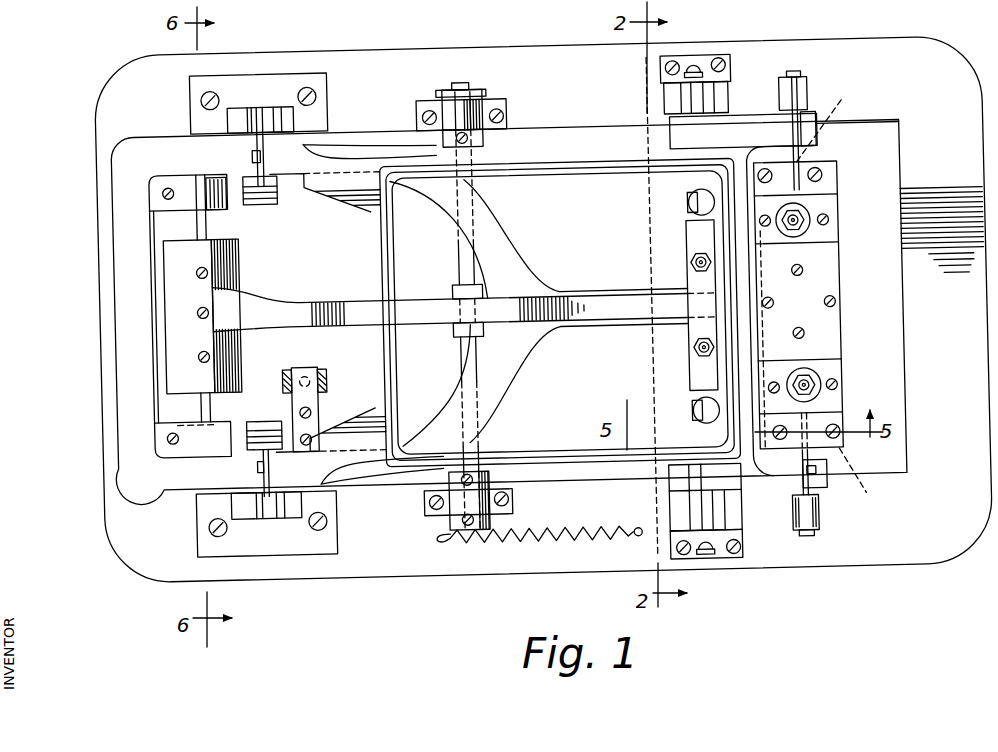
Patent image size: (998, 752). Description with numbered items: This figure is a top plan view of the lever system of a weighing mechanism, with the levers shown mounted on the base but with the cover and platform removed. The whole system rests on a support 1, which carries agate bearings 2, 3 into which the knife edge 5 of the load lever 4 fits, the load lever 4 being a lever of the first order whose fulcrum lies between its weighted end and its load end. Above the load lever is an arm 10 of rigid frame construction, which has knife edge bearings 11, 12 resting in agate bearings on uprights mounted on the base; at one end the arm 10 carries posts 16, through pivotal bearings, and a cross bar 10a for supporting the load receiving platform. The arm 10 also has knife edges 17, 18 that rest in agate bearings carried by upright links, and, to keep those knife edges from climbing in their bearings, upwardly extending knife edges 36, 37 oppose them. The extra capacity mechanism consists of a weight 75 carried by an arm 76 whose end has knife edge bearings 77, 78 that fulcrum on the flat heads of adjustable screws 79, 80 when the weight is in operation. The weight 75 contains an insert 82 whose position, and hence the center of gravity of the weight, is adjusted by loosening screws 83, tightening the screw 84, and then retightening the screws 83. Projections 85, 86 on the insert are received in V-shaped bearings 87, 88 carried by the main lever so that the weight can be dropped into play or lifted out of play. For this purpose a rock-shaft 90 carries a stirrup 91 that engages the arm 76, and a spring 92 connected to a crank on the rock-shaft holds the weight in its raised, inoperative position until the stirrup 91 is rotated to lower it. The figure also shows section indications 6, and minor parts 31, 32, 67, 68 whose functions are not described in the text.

The support 1 is at (949, 77).
The agate bearing 2 is at (725, 530).
The agate bearing 3 is at (713, 83).
The load lever 4 is at (503, 263).
The knife edge 5 is at (680, 55).
The bolt 6 is at (712, 560).
The arm 10 is at (553, 163).
The cross bar 10a is at (787, 295).
The knife edge bearing 11 is at (257, 503).
The knife edge bearing 12 is at (258, 107).
The post 16 is at (812, 215).
The knife edge 17 is at (783, 513).
The knife edge 18 is at (803, 77).
The block 31 is at (282, 205).
The block 32 is at (267, 430).
The knife edge 36 is at (865, 482).
The knife edge 37 is at (813, 268).
The screw 67 is at (305, 370).
The bracket 68 is at (322, 378).
The weight 75 is at (240, 265).
The arm 76 is at (343, 310).
The knife edge bearing 77 is at (687, 197).
The knife edge bearing 78 is at (690, 403).
The adjustable screw 79 is at (683, 205).
The adjustable screw 80 is at (693, 417).
The insert 82 is at (197, 337).
The screw 83 is at (203, 273).
The screw 84 is at (200, 313).
The projection 85 is at (203, 180).
The projection 86 is at (210, 453).
The V-shaped bearing 87 is at (150, 200).
The V-shaped bearing 88 is at (157, 423).
The rock-shaft 90 is at (462, 90).
The stirrup 91 is at (458, 282).
The spring 92 is at (520, 542).